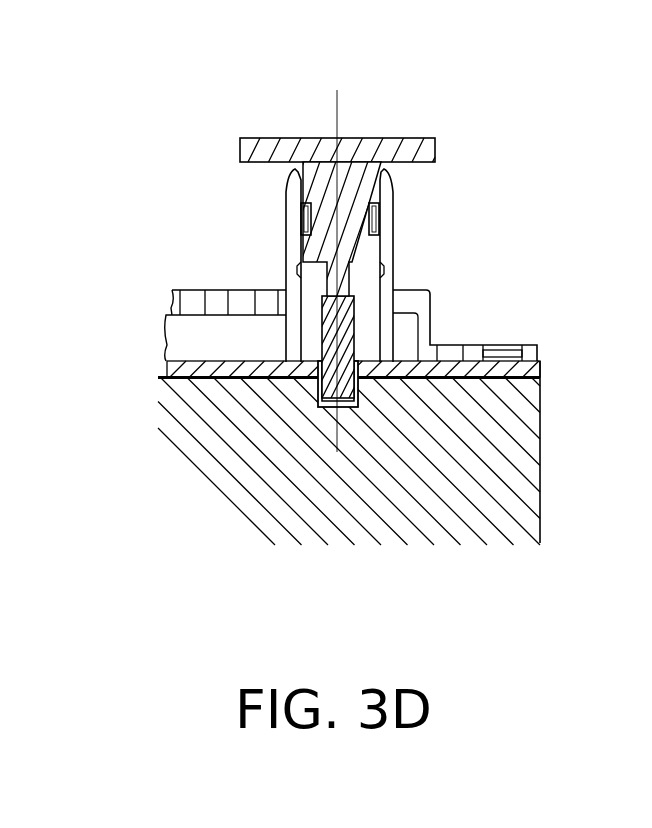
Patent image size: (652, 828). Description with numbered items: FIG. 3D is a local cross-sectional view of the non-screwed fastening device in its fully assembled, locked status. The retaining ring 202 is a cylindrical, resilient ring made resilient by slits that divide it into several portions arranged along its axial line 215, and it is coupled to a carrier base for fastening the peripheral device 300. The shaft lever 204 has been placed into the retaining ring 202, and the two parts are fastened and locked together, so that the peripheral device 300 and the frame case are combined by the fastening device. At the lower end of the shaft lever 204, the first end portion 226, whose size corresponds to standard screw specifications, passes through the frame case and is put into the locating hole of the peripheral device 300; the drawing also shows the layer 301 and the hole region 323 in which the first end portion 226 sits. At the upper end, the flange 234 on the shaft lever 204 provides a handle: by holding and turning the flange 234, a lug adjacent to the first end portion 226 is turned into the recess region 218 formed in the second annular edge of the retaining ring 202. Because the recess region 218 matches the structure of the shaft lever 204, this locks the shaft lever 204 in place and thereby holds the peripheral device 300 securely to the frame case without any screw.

The retaining ring 202 is at (298, 219).
The shaft lever 204 is at (392, 140).
The axial line 215 is at (337, 100).
The recess region 218 is at (403, 325).
The first end portion 226 is at (325, 408).
The flange 234 is at (436, 150).
The peripheral device 300 is at (518, 466).
The base plate layer 301 is at (518, 365).
The socket / receptacle 323 is at (373, 408).